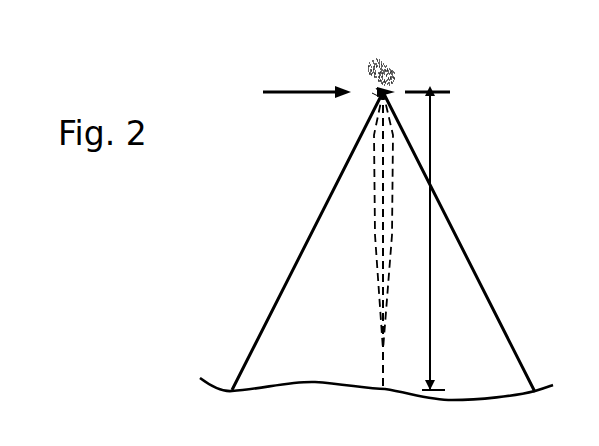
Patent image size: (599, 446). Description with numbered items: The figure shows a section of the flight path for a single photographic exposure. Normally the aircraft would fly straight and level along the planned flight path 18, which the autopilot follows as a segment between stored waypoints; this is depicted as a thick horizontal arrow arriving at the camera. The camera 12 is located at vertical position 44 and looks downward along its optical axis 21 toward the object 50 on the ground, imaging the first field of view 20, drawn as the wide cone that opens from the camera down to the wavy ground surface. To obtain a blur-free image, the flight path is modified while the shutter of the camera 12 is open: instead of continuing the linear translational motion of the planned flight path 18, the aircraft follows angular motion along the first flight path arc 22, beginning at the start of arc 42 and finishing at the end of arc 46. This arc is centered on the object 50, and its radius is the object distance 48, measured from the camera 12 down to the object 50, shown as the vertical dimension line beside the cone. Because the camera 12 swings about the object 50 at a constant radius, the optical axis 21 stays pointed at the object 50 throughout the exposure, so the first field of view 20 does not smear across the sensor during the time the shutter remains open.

The camera 12 is at (383, 70).
The planned flight path 18 is at (298, 91).
The first field of view 20 is at (320, 212).
The optical axis 21 is at (378, 218).
The first flight path arc 22 is at (391, 89).
The start of arc 42 is at (373, 95).
The vertical position 44 is at (378, 91).
The end of arc 46 is at (393, 94).
The object distance 48 is at (431, 131).
The object 50 is at (383, 388).